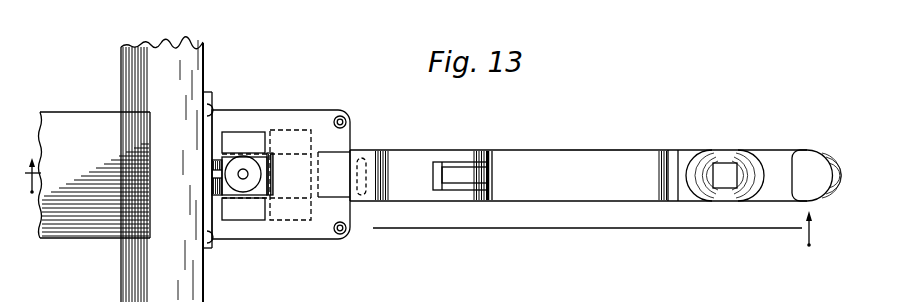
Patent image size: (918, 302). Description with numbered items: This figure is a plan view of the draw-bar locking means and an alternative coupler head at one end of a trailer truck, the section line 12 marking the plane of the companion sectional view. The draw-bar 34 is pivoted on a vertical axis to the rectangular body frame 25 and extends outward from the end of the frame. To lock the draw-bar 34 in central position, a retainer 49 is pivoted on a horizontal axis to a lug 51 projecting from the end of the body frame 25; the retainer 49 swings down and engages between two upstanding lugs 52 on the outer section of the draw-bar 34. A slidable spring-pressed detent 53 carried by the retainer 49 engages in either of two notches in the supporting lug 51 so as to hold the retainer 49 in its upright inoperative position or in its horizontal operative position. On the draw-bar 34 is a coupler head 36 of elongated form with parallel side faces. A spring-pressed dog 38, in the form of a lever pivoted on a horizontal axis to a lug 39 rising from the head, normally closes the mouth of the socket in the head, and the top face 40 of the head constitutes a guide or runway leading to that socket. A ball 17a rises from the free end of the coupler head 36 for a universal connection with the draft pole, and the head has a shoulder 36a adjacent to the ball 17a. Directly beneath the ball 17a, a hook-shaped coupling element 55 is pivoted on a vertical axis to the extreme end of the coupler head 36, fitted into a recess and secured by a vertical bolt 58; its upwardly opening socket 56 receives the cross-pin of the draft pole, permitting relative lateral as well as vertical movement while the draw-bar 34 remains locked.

The section line 12— 12 is at (26, 172).
The body frame 25 is at (176, 52).
The draw-bar 34 is at (70, 117).
The retainer 49 is at (284, 130).
The lug 51 is at (274, 177).
The upstanding lugs 52 is at (325, 200).
The detent 53 is at (247, 188).
The lug 39 is at (425, 153).
The spring-pressed dog 38 is at (478, 163).
The top face 40 is at (598, 137).
The shoulder 36a is at (663, 151).
The ball 17a is at (701, 132).
The vertical bolt 58 is at (731, 173).
The coupling element 55 is at (807, 161).
The coupler head 36 is at (597, 191).
The socket 56 is at (786, 192).